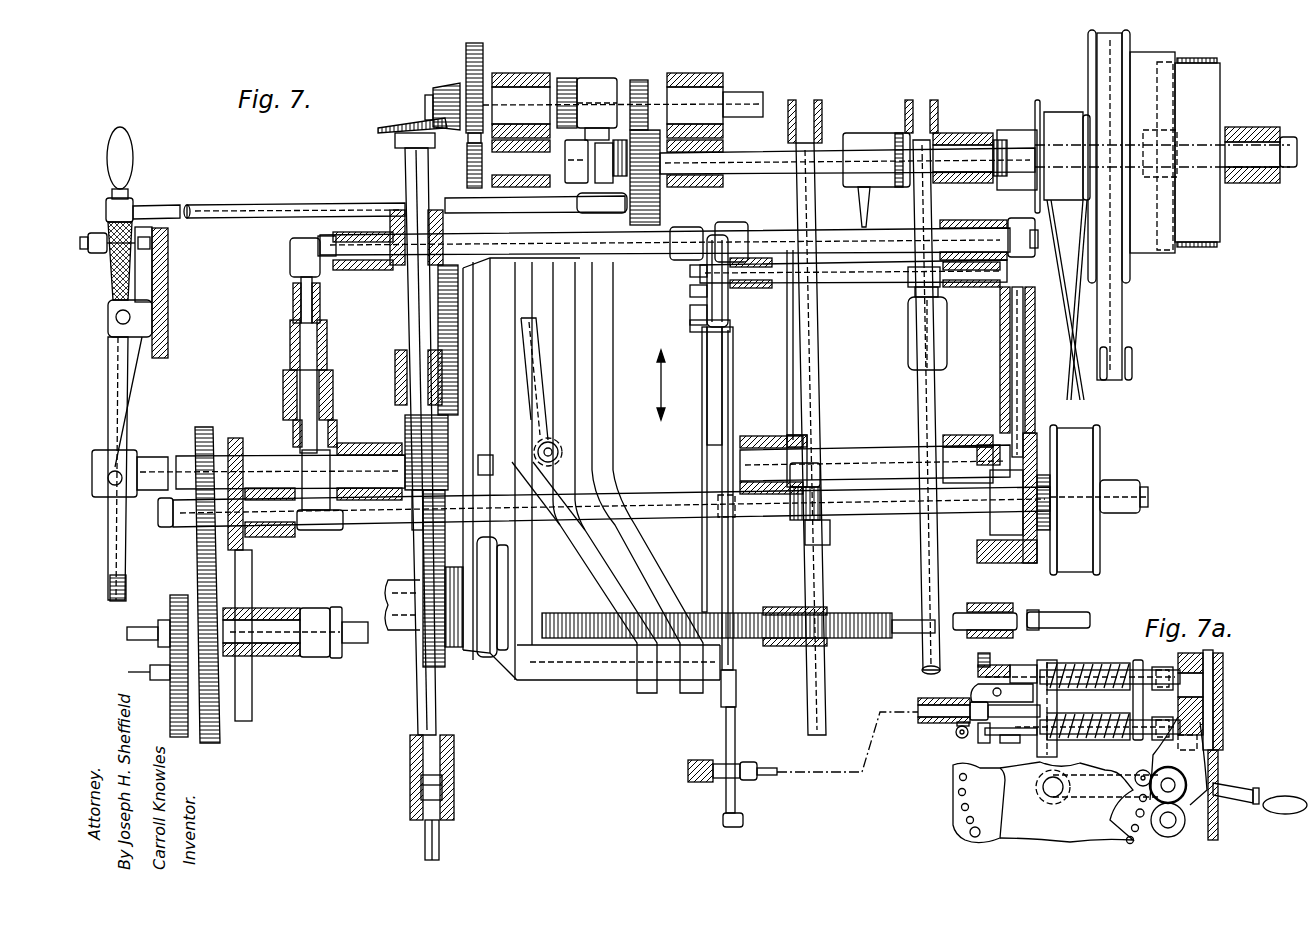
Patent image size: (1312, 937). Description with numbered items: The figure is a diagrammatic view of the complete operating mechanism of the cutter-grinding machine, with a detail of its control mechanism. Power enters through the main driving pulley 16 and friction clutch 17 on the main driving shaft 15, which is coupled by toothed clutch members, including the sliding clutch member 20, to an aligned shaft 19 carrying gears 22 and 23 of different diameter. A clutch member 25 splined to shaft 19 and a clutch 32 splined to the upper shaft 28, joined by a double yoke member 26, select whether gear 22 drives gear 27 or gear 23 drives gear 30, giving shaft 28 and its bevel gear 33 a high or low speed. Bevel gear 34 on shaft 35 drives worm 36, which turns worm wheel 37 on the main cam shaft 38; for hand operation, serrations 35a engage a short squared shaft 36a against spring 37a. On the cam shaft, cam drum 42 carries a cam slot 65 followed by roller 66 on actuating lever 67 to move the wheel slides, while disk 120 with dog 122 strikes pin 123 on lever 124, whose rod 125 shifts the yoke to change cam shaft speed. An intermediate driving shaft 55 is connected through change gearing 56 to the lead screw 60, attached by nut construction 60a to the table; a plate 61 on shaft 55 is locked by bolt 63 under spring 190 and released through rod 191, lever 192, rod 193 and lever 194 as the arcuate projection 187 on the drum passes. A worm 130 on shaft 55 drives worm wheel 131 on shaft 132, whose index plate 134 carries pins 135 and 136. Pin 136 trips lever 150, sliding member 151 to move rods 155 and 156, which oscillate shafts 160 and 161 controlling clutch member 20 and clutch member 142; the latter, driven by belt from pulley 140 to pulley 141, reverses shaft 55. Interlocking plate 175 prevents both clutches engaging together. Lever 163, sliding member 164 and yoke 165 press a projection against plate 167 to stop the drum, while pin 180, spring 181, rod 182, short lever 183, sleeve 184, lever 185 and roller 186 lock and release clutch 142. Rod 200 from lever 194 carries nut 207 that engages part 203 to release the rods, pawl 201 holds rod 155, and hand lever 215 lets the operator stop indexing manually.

In FIG. 7, the main driving shaft 15 is at (1250, 180).
In FIG. 7, the main driving pulley 16 is at (1200, 95).
In FIG. 7, the friction clutch 17 is at (1160, 260).
In FIG. 7, the shaft 19 is at (735, 157).
In FIG. 7, the clutch member 20 is at (875, 140).
In FIG. 7, the gear 22 is at (652, 217).
In FIG. 7, the gear 23 is at (470, 200).
In FIG. 7, the clutch member 25 is at (600, 183).
In FIG. 7, the double yoke member 26 is at (597, 128).
In FIG. 7, the gear 27 is at (640, 80).
In FIG. 7, the shaft 28 is at (720, 95).
In FIG. 7, the gear 30 is at (483, 48).
In FIG. 7, the clutch 32 is at (570, 80).
In FIG. 7, the bevel gear 33 is at (436, 88).
In FIG. 7, the bevel gear 34 is at (380, 128).
In FIG. 7, the shaft 35 is at (405, 172).
In FIG. 7, the serrations 35a is at (421, 780).
In FIG. 7, the worm 36 is at (405, 423).
In FIG. 7, the short squared shaft 36a is at (440, 832).
In FIG. 7, the worm wheel 37 is at (421, 555).
In FIG. 7, the spring 37a is at (412, 800).
In FIG. 7, the main cam shaft 38 is at (272, 462).
In FIG. 7, the cam drum 42 is at (572, 681).
In FIG. 7, the intermediate driving shaft 55 is at (612, 503).
In FIG. 7, the change gearing 56 is at (200, 596).
In FIG. 7, the lead screw 60 is at (316, 655).
In FIG. 7, the nut construction 60a is at (790, 648).
In FIG. 7, the plate or disk 61 is at (325, 460).
In FIG. 7, the bolt 63 is at (294, 415).
In FIG. 7, the cam slot 65 is at (580, 475).
In FIG. 7, the roller 66 is at (535, 445).
In FIG. 7, the actuating lever 67 is at (548, 360).
In FIG. 7, the disk 120 is at (108, 555).
In FIG. 7, the dog 122 is at (104, 455).
In FIG. 7, the pin or small roller 123 is at (121, 472).
In FIG. 7, the lever 124 is at (130, 392).
In FIG. 7, the rod 125 is at (215, 207).
In FIG. 7, the worm 130 is at (830, 525).
In FIG. 7, the worm wheel 131 is at (733, 510).
In FIG. 7, the shaft 132 is at (816, 356).
In FIG. 7A, the shaft 132 is at (1043, 795).
In FIG. 7A, the index plate 134 is at (953, 800).
In FIG. 7A, the pin 135 is at (1135, 815).
In FIG. 7A, the pin 136 is at (970, 833).
In FIG. 7, the pulley 140 is at (1052, 115).
In FIG. 7, the pulley 141 is at (1092, 445).
In FIG. 7, the clutch member 142 is at (992, 540).
In FIG. 7A, the lever 150 is at (1043, 752).
In FIG. 7A, the member 151 is at (1136, 664).
In FIG. 7A, the rod 155 is at (1085, 663).
In FIG. 7A, the rod 156 is at (1100, 738).
In FIG. 7, the shaft 160 is at (923, 580).
In FIG. 7A, the shaft 160 is at (1175, 783).
In FIG. 7, the shaft 161 is at (921, 660).
In FIG. 7A, the shaft 161 is at (1175, 822).
In FIG. 7, the lever 163 is at (908, 305).
In FIG. 7, the sliding member 164 is at (838, 283).
In FIG. 7, the yoke 165 is at (868, 218).
In FIG. 7, the plate 167 is at (710, 362).
In FIG. 7A, the interlocking plate 175 is at (1212, 697).
In FIG. 7, the pin 180 is at (1022, 420).
In FIG. 7, the spring 181 is at (1000, 345).
In FIG. 7, the rod 182 is at (1000, 300).
In FIG. 7, the short lever 183 is at (1032, 252).
In FIG. 7, the sleeve 184 is at (768, 227).
In FIG. 7, the lever 185 is at (735, 278).
In FIG. 7, the roller 186 is at (690, 327).
In FIG. 7, the arcuate projection 187 is at (702, 412).
In FIG. 7, the spring 190 is at (290, 341).
In FIG. 7, the rod 191 is at (300, 285).
In FIG. 7, the lever 192 is at (290, 250).
In FIG. 7, the rod 193 is at (365, 270).
In FIG. 7, the lever 194 is at (690, 285).
In FIG. 7, the rod 200 is at (732, 595).
In FIG. 7A, the rod 200 is at (955, 730).
In FIG. 7A, the pawl 201 is at (972, 695).
In FIG. 7A, the index mechanism part 203 is at (988, 740).
In FIG. 7, the nut or projection 207 is at (744, 815).
In FIG. 7A, the hand lever 215 is at (1280, 797).